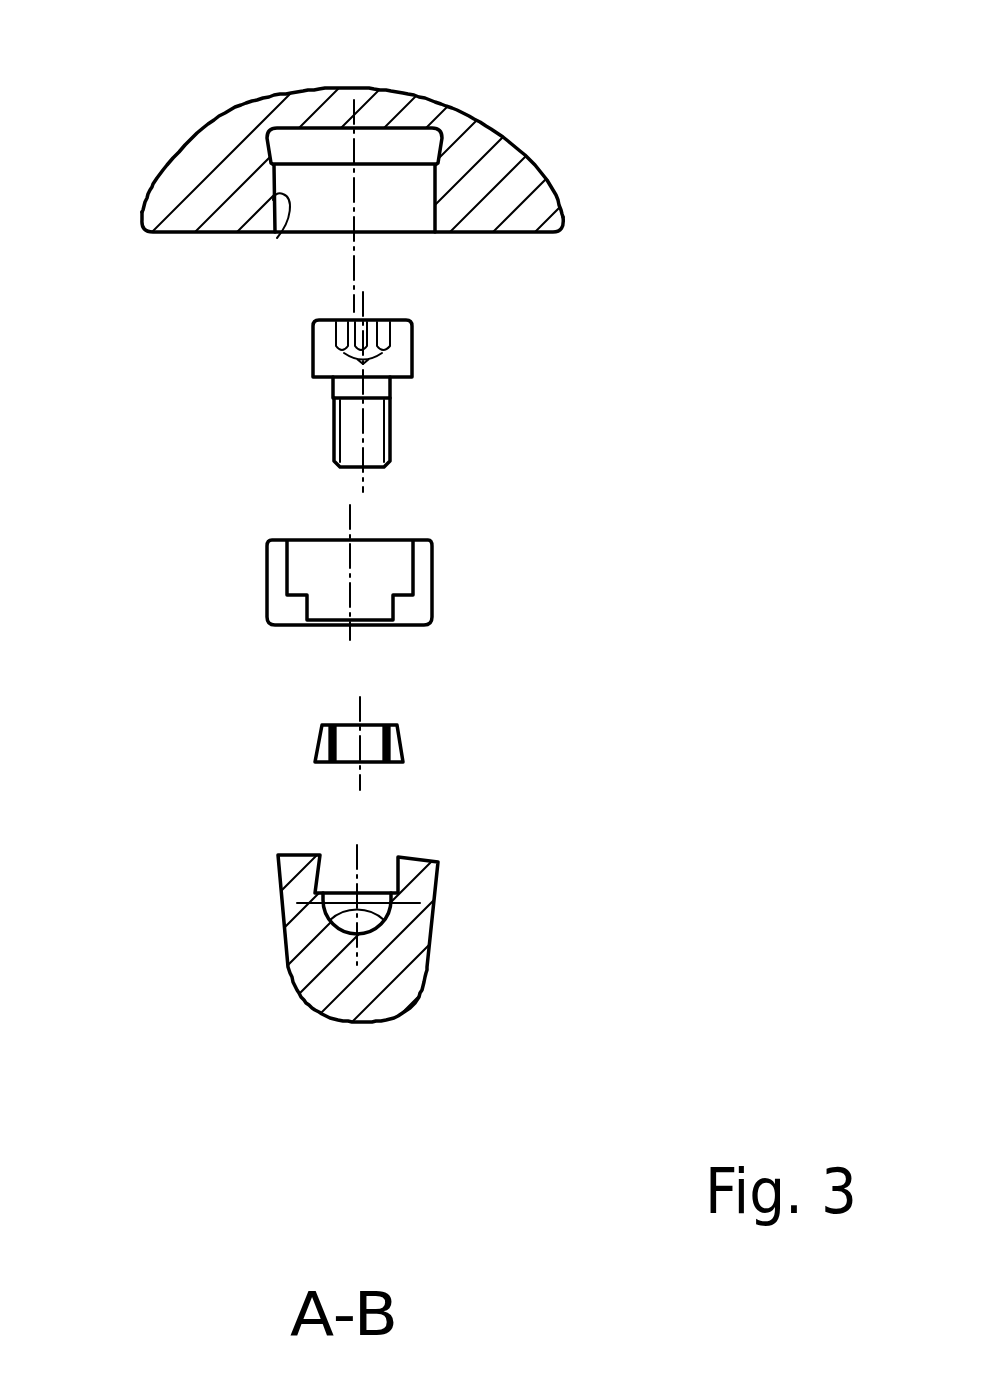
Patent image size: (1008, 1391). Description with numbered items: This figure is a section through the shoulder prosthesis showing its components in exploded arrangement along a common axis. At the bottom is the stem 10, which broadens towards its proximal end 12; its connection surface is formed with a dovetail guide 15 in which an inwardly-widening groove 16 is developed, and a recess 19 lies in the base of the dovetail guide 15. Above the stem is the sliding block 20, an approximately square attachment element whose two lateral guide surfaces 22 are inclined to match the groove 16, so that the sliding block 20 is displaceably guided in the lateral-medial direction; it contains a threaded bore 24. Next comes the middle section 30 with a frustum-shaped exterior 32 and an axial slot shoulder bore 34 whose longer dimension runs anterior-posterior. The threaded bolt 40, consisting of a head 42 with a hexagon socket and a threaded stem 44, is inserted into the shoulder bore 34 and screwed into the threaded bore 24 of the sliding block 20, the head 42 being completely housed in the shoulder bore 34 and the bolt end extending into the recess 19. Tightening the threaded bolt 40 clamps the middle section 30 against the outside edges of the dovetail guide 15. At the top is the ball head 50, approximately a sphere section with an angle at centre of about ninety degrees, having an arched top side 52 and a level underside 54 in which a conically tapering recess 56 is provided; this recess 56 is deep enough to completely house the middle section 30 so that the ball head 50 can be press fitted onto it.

The stem 10 is at (392, 949).
The proximal end 12 is at (373, 940).
The dovetail guide 15 is at (368, 880).
The groove 16 is at (392, 882).
The recess 19 is at (283, 950).
The sliding block 20 is at (327, 778).
The lateral guide surfaces 22 is at (403, 747).
The threaded bore 24 is at (347, 762).
The middle section 30 is at (353, 540).
The frustum-shaped exterior 32 is at (432, 595).
The shoulder bore 34 is at (317, 562).
The threaded bolt 40 is at (347, 392).
The head 42 is at (398, 355).
The threaded stem 44 is at (380, 445).
The ball head 50 is at (429, 167).
The arched top side 52 is at (412, 92).
The level underside 54 is at (483, 238).
The conically tapering recess 56 is at (277, 238).